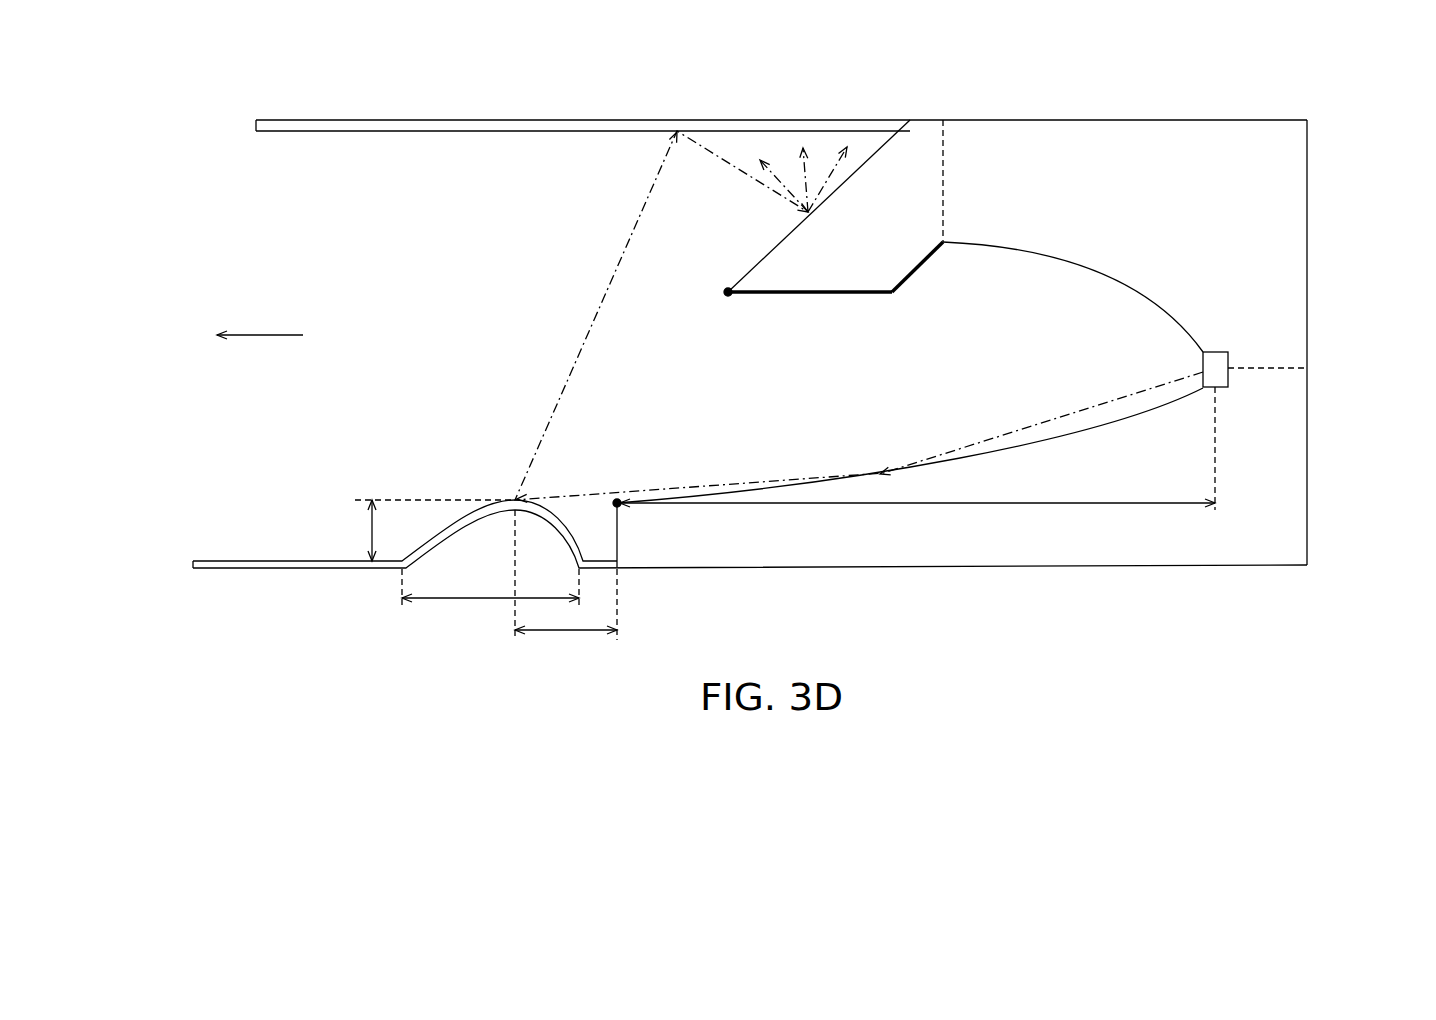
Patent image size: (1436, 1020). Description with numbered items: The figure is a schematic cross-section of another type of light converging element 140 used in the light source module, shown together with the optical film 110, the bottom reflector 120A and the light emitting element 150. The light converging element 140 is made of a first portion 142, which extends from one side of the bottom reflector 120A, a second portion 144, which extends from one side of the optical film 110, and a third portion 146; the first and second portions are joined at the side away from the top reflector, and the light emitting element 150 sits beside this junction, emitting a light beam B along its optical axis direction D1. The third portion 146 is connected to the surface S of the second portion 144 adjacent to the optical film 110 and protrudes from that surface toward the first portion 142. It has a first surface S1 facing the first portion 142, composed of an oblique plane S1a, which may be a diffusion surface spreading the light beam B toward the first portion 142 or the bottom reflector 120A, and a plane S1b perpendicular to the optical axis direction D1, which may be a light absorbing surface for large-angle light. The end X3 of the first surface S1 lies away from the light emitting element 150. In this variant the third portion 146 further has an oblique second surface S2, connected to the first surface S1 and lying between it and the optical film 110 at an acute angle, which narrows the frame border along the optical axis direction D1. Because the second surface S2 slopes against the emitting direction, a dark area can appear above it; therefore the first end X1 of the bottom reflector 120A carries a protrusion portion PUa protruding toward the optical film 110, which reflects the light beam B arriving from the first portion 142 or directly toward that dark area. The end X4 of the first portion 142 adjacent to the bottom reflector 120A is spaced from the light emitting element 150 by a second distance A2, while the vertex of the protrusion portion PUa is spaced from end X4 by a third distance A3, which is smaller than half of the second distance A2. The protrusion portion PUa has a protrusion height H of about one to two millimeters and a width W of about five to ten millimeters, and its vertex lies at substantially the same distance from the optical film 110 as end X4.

The optical film 110 is at (551, 119).
The bottom reflector 120A is at (297, 569).
The light converging element 140 is at (1333, 588).
The first portion 142 is at (1293, 460).
The second portion 144 is at (1293, 265).
The third portion 146 is at (944, 215).
The light emitting element 150 is at (1218, 363).
The first surface S1 is at (1205, 615).
The plane S1a is at (810, 300).
The plane S1b is at (925, 268).
The second surface S2 is at (773, 248).
The surface S is at (939, 196).
The light beam B is at (683, 487).
The protrusion portion PUa is at (507, 486).
The first end X1 is at (610, 576).
The end X3 is at (712, 293).
The end X4 is at (603, 513).
The protrusion height H is at (360, 530).
The width W is at (490, 601).
The second distance A2 is at (917, 462).
The third distance A3 is at (566, 590).
The optical axis direction D1 is at (245, 337).